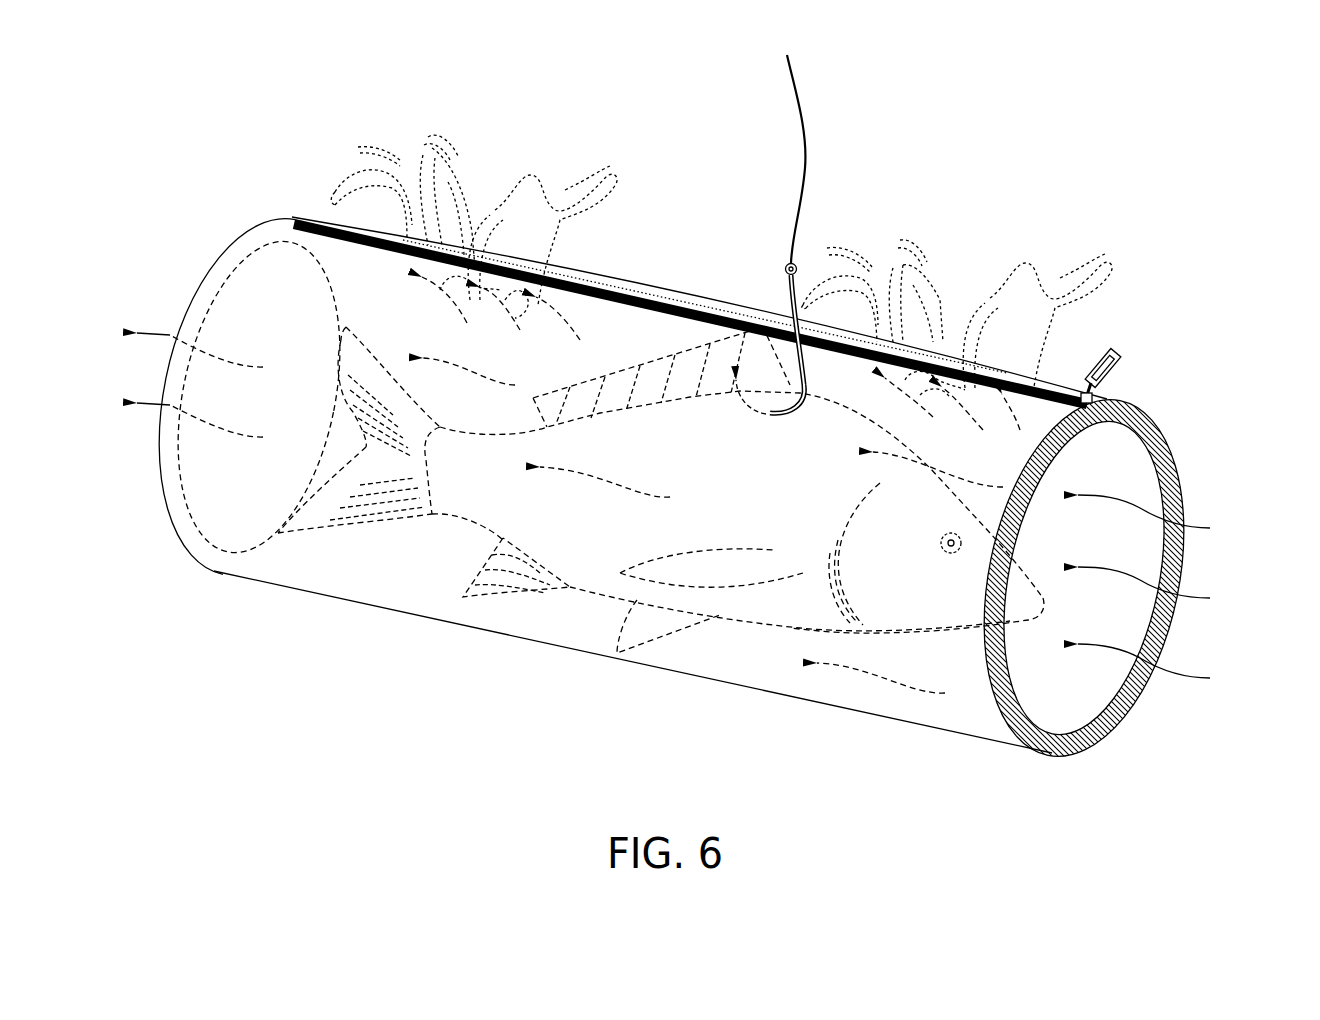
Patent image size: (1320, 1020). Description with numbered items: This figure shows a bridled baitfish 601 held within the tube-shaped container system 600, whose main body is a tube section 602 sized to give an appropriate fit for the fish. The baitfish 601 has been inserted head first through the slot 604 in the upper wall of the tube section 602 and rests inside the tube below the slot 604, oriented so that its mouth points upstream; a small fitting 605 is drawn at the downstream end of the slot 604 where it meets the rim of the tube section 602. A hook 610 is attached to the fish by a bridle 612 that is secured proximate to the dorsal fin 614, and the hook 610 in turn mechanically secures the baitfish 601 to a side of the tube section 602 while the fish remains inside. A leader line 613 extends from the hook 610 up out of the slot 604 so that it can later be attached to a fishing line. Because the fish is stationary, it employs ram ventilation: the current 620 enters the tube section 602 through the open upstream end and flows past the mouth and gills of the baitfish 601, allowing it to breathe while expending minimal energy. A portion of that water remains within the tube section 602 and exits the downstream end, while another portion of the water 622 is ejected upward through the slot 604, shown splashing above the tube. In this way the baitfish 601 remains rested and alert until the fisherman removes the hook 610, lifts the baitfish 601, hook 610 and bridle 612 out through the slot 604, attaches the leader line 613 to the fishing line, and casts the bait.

The tube-shaped container system 600 is at (1104, 160).
The baitfish 601 is at (787, 604).
The tube section 602 is at (283, 590).
The slot 604 is at (1064, 388).
The fastener clip 605 is at (1116, 352).
The hook 610 is at (785, 283).
The bridle 612 is at (770, 414).
The leader line 613 is at (810, 160).
The dorsal fin 614 is at (647, 352).
The current 620 is at (163, 333).
The water 622 is at (566, 191).